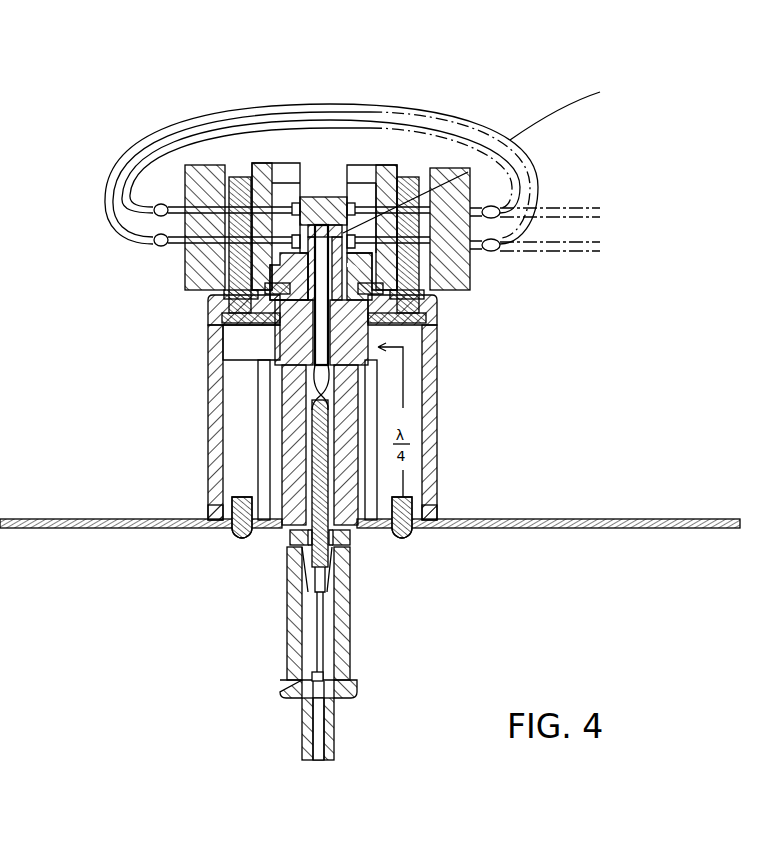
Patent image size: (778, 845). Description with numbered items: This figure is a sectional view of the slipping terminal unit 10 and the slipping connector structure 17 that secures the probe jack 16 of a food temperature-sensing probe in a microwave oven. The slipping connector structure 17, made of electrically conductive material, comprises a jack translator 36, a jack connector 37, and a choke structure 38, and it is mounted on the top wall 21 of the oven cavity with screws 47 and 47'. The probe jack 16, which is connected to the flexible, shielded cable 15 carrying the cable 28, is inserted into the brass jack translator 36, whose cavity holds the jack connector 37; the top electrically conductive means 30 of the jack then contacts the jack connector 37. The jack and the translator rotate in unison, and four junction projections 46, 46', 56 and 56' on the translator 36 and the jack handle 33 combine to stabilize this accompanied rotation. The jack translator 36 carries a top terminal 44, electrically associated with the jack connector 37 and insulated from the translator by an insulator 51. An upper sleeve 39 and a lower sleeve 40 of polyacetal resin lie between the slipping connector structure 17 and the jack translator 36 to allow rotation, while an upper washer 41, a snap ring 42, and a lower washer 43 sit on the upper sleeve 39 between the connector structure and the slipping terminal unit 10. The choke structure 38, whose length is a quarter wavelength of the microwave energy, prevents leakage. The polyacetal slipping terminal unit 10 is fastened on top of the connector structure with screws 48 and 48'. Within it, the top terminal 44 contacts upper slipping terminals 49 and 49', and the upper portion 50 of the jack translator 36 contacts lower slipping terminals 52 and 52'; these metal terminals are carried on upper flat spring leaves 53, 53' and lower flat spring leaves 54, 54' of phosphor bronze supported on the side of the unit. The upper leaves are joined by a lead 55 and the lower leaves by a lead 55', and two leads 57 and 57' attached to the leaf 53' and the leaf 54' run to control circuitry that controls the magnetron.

The slipping terminal unit 10 is at (110, 163).
The flexible, shielded cable 15 is at (335, 737).
The probe jack 16 is at (213, 462).
The slipping connector structure 17 is at (437, 462).
The top wall 21 is at (663, 527).
The cable 28 is at (302, 670).
The top electrically conductive means 30 is at (213, 367).
The jack handle 33 is at (353, 647).
The jack translator 36 is at (238, 423).
The jack connector 37 is at (213, 392).
The choke structure 38 is at (213, 430).
The upper sleeve 39 is at (213, 338).
The lower sleeve 40 is at (213, 492).
The upper washer 41 is at (185, 270).
The snap ring 42 is at (213, 292).
The lower washer 43 is at (213, 313).
The top terminal 44 is at (331, 197).
The junction projection 46 is at (251, 569).
The junction projection 46' is at (400, 562).
The screw 47 is at (188, 545).
The screw 47' is at (456, 542).
The screw 48 is at (203, 171).
The screw 48' is at (454, 185).
The upper slipping terminal 49 is at (299, 158).
The upper slipping terminal 49' is at (365, 165).
The upper portion 50 is at (154, 210).
The insulator 51 is at (213, 357).
The lower slipping terminal 52 is at (174, 234).
The lower slipping terminal 52' is at (407, 165).
The upper flat spring leaf 53 is at (267, 165).
The upper flat spring leaf 53' is at (387, 171).
The lower flat spring leaf 54 is at (178, 237).
The lower flat spring leaf 54' is at (492, 186).
The lead 55 is at (303, 136).
The lead 55' is at (281, 150).
The junction projection 56 is at (274, 581).
The junction projection 56' is at (381, 576).
The lead 57 is at (566, 194).
The lead 57' is at (569, 258).